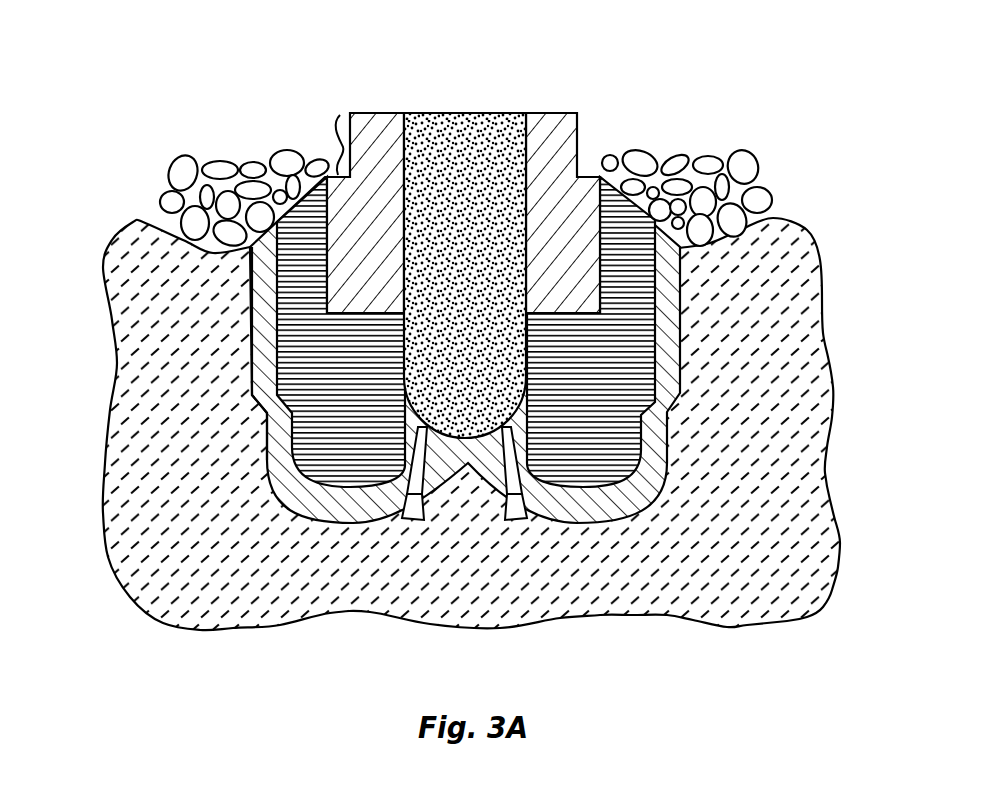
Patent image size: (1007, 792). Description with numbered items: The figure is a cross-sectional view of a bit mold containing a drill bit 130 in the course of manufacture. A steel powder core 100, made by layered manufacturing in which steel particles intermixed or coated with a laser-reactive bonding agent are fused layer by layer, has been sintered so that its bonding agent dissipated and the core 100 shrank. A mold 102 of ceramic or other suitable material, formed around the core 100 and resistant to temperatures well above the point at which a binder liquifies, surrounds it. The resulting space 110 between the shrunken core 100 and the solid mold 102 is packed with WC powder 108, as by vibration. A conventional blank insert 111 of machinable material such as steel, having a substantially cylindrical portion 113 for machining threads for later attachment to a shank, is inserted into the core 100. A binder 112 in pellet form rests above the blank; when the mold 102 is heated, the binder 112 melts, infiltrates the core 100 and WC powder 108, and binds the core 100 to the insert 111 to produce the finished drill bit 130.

The steel powder core 100 is at (638, 347).
The mold 102 is at (795, 577).
The WC powder 108 is at (262, 385).
The space 110 is at (672, 285).
The blank insert 111 is at (556, 119).
The binder 112 is at (181, 168).
The substantially cylindrical portion 113 is at (333, 143).
The drill bit 130 is at (681, 93).